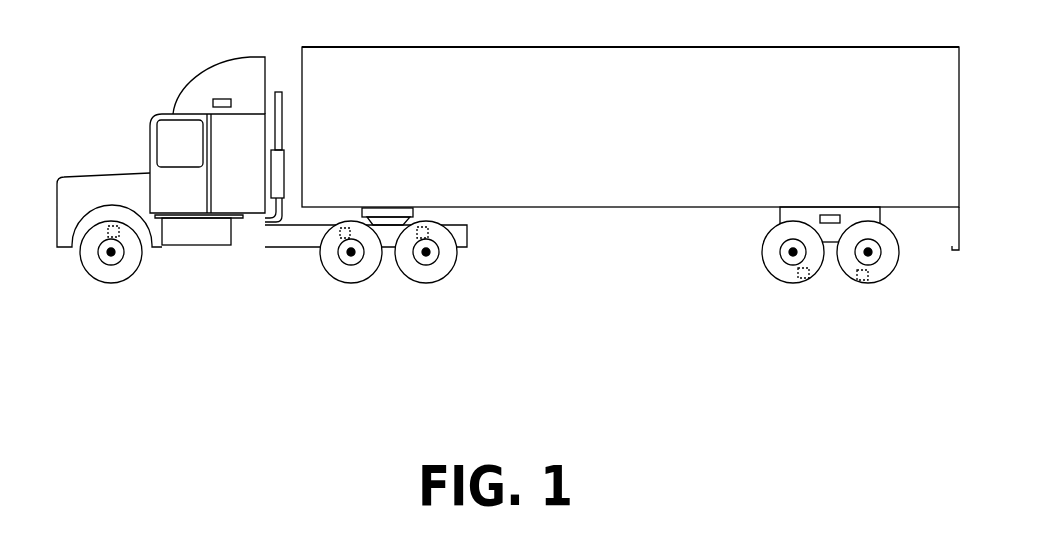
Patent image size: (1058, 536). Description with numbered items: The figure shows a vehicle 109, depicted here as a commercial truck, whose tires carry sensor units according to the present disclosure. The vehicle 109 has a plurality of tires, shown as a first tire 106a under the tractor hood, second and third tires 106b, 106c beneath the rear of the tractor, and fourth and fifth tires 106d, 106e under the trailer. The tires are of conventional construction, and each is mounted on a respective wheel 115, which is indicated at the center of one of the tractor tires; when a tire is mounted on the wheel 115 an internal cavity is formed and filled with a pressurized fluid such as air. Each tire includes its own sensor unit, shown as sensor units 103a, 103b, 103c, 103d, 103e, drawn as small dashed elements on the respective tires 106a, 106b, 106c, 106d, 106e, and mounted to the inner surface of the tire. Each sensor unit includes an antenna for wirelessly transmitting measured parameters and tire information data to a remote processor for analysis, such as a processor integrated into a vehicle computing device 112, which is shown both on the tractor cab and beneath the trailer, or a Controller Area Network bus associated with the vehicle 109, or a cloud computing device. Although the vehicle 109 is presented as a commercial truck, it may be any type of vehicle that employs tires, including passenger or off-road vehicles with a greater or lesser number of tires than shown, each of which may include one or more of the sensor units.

The vehicle 109 is at (500, 221).
The vehicle computing device 112 is at (232, 98).
The tire 106a is at (123, 272).
The tire 106b is at (331, 251).
The tire 106c is at (428, 256).
The tire 106d is at (780, 285).
The tire 106e is at (893, 267).
The sensor unit 103a is at (119, 238).
The sensor unit 103b is at (350, 230).
The sensor unit 103c is at (430, 230).
The sensor unit 103d is at (808, 277).
The sensor unit 103e is at (867, 278).
The wheel 115 is at (437, 257).